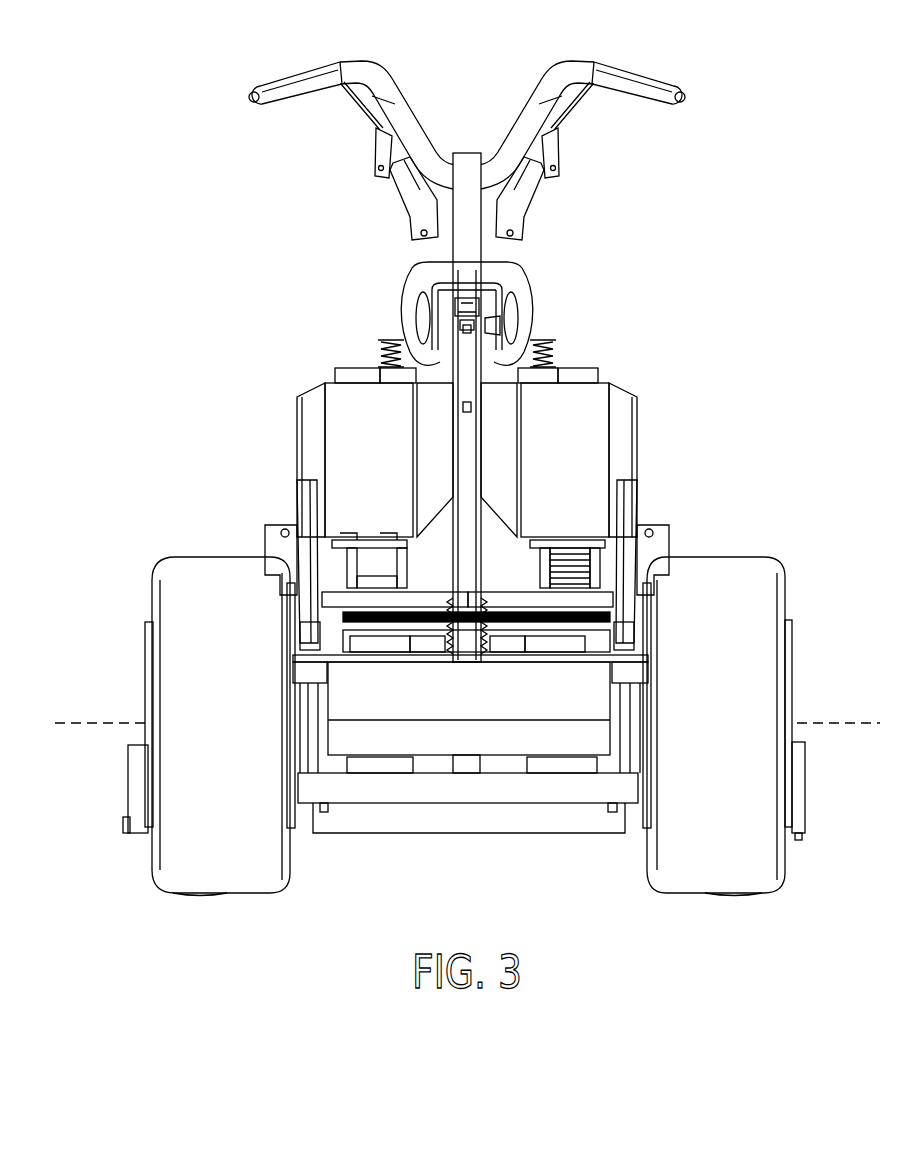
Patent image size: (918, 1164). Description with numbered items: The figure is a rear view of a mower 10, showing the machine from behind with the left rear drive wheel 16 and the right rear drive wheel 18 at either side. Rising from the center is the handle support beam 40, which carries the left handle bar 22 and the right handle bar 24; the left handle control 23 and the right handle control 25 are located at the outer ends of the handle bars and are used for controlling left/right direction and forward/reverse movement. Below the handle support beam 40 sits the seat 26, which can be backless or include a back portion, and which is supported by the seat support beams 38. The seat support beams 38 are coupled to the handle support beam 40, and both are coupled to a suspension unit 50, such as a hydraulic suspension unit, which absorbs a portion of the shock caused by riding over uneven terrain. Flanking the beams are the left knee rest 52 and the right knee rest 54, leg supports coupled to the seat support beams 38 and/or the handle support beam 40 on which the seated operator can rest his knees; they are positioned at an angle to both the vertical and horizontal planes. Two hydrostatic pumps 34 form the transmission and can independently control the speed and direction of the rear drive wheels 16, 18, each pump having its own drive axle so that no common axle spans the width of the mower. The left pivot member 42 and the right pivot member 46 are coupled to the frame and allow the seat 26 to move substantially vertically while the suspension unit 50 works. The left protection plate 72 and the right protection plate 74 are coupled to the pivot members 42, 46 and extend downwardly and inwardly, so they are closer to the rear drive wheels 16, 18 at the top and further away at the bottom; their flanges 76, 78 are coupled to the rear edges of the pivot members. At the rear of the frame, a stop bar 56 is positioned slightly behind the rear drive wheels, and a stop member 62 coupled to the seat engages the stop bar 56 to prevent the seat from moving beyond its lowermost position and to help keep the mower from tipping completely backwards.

The mower 10 is at (731, 155).
The left rear drive wheel 16 is at (195, 807).
The right rear drive wheel 18 is at (690, 855).
The left handle bar 22 is at (292, 77).
The left handle control 23 is at (252, 102).
The right handle bar 24 is at (633, 73).
The right handle control 25 is at (683, 102).
The seat 26 is at (507, 273).
The hydrostatic pumps 34 is at (383, 553).
The seat support beams 38 is at (468, 408).
The handle support beam 40 is at (465, 157).
The left pivot member 42 is at (310, 530).
The right pivot member 46 is at (630, 537).
The suspension unit 50 is at (490, 647).
The left knee rest 52 is at (362, 387).
The right knee rest 54 is at (595, 392).
The stop bar 56 is at (373, 792).
The stop member 62 is at (427, 737).
The left protection plate 72 is at (313, 603).
The right protection plate 74 is at (610, 573).
The flange 76 is at (310, 635).
The flange 78 is at (630, 633).